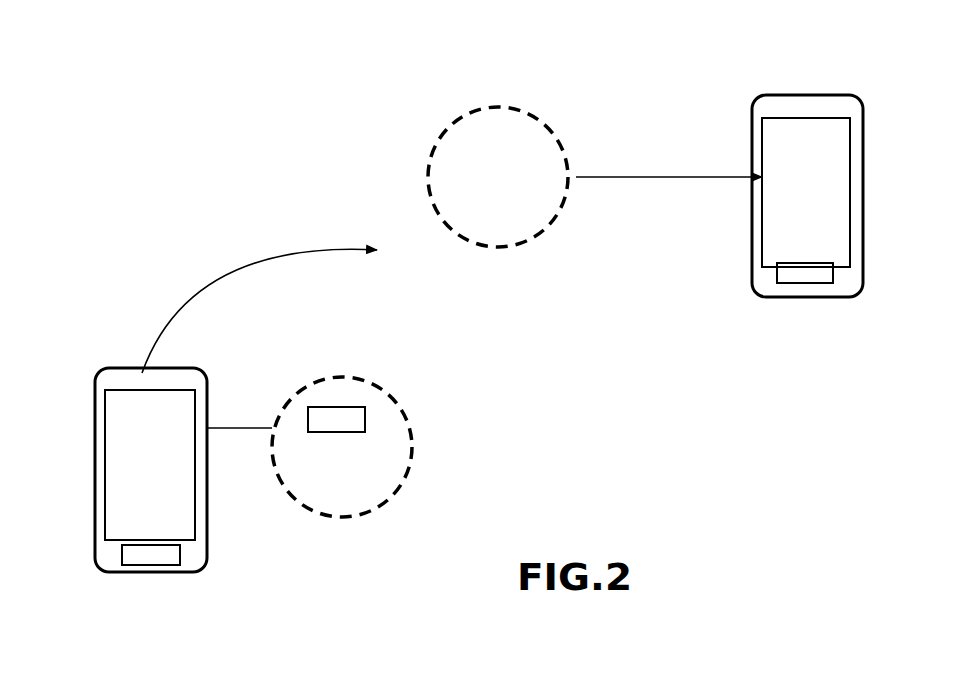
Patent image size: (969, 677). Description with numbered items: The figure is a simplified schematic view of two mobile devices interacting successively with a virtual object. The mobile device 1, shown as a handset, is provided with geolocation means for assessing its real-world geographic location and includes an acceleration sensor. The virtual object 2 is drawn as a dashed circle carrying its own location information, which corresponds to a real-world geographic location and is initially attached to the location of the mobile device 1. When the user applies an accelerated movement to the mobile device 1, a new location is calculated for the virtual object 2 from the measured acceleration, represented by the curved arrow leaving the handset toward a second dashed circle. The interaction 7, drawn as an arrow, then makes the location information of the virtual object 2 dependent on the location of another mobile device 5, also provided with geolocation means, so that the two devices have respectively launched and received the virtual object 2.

The mobile device 1 is at (184, 357).
The virtual object 2 is at (405, 410).
The another mobile device 5 is at (876, 161).
The interaction 7 is at (625, 177).